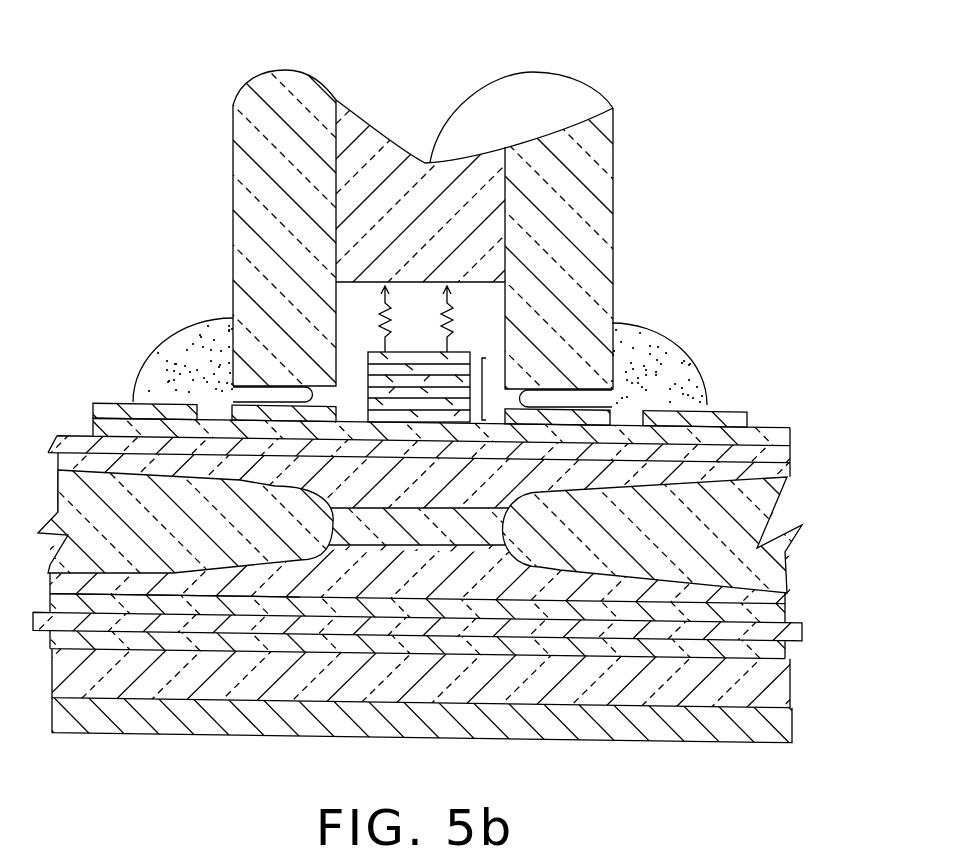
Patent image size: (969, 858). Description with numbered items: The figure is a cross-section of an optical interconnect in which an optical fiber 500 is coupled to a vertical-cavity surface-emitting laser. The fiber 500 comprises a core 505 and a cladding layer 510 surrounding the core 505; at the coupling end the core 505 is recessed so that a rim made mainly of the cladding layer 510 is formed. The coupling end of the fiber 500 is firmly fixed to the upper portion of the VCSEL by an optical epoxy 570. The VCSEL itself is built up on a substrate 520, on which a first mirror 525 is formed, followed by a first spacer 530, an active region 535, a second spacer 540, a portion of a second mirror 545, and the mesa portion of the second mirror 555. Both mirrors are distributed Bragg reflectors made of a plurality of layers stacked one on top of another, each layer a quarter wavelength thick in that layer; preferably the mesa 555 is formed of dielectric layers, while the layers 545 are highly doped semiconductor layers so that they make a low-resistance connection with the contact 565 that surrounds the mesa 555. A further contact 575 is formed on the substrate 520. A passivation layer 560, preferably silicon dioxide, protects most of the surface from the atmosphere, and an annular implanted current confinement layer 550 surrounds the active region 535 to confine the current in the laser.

The optical fiber 500 is at (484, 429).
The core 505 is at (612, 70).
The cladding layer 510 is at (600, 228).
The mesa 555 is at (485, 390).
The optical epoxy 570 is at (210, 328).
The contact 565 is at (220, 405).
The passivation layer 560 is at (130, 403).
The second mirror portion 545 is at (812, 430).
The annular implanted current confinement layer 550 is at (760, 572).
The first mirror 525 is at (818, 600).
The substrate 520 is at (750, 685).
The contact 575 is at (748, 730).
The second spacer 540 is at (383, 490).
The active region 535 is at (424, 530).
The first spacer 530 is at (550, 590).